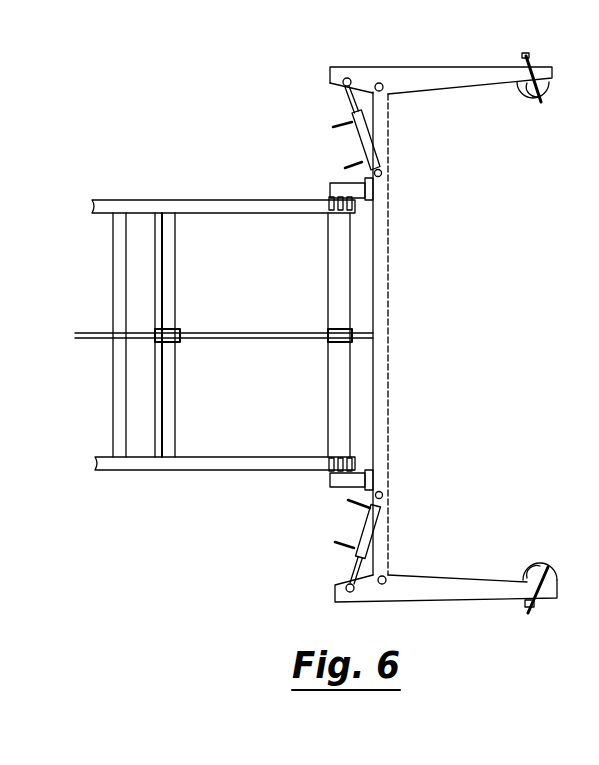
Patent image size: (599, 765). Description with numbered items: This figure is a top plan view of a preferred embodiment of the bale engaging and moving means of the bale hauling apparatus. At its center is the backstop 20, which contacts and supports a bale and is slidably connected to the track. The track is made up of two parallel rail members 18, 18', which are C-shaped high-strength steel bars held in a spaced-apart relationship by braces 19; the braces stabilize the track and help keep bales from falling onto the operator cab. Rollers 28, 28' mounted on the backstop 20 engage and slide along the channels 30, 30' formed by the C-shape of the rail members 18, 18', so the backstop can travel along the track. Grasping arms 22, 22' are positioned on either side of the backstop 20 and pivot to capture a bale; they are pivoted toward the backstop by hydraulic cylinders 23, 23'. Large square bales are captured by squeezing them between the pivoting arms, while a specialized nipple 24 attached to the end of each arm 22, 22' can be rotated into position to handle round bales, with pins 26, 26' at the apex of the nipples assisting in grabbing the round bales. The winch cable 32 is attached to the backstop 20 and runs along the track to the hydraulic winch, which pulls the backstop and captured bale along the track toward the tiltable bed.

The rail member 18 is at (223, 314).
The rail member 18' is at (225, 485).
The brace 19 is at (165, 270).
The backstop 20 is at (383, 265).
The grasping arm 22 is at (441, 62).
The grasping arm 22' is at (446, 604).
The hydraulic cylinder 23 is at (336, 128).
The hydraulic cylinder 23' is at (331, 538).
The nipple 24 is at (547, 86).
The pin 26 is at (521, 118).
The pin 26' is at (520, 550).
The roller 28 is at (328, 184).
The roller 28' is at (321, 491).
The channel 30 is at (308, 222).
The channel 30' is at (308, 449).
The winch cable 32 is at (95, 333).